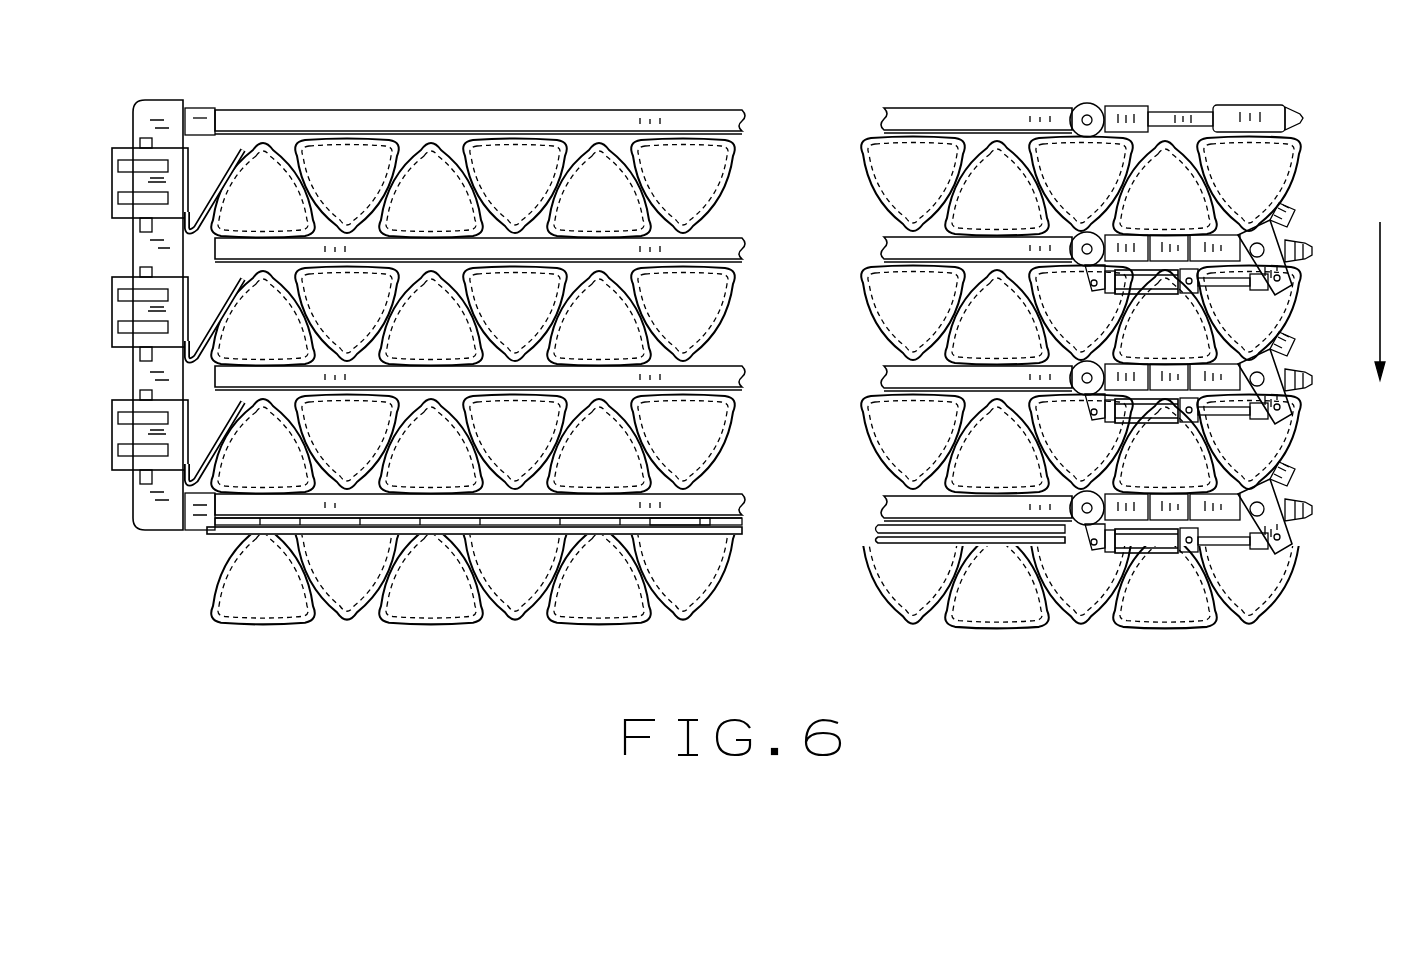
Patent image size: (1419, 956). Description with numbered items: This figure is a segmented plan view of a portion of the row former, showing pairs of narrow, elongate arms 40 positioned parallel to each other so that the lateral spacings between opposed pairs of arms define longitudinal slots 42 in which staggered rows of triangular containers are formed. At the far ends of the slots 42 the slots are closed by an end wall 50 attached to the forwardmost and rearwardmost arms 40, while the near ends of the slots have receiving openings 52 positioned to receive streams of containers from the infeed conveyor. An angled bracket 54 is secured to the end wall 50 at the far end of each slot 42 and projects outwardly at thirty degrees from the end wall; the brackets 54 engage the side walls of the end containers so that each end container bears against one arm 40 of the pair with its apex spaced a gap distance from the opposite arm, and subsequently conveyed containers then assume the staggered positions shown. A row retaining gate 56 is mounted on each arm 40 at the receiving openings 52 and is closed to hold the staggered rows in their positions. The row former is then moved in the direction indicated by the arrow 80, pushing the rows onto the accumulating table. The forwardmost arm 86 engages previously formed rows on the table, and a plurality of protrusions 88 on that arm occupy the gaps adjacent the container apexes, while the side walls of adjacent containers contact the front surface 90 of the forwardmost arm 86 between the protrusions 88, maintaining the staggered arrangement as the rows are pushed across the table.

The arm 40 is at (448, 120).
The longitudinal slot 42 is at (846, 165).
The end wall 50 is at (133, 253).
The receiving opening 52 is at (1325, 160).
The angled bracket 54 is at (205, 185).
The row retaining gate 56 is at (1285, 222).
The arrow 80 is at (1380, 265).
The forwardmost arm 86 is at (372, 512).
The protrusion 88 is at (265, 538).
The front surface 90 is at (692, 520).